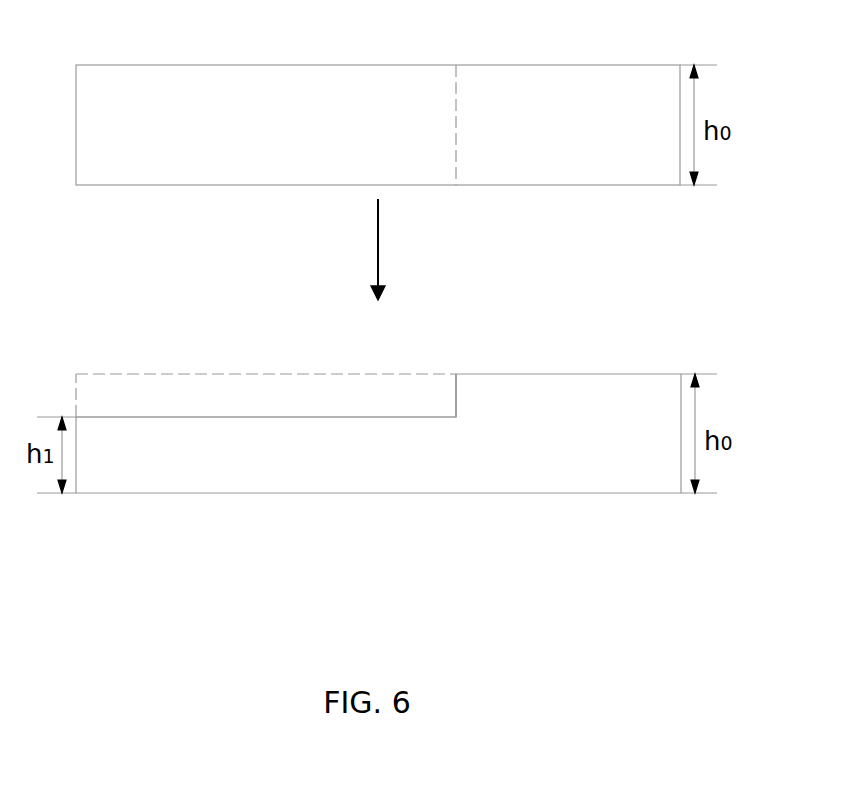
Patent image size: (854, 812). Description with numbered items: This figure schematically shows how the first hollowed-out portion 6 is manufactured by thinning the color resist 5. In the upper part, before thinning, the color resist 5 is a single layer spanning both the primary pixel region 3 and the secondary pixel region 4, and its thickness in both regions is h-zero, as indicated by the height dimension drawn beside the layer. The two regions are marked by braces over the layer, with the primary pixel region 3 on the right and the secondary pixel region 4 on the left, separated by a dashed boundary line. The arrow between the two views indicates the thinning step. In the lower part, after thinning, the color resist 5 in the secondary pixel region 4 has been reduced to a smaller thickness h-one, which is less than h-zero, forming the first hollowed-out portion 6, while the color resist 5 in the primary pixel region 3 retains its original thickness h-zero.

The primary pixel region 3 is at (456, 62).
The secondary pixel region 4 is at (76, 62).
The color resist 5 is at (640, 140).
The first hollowed-out portion 6 is at (267, 393).